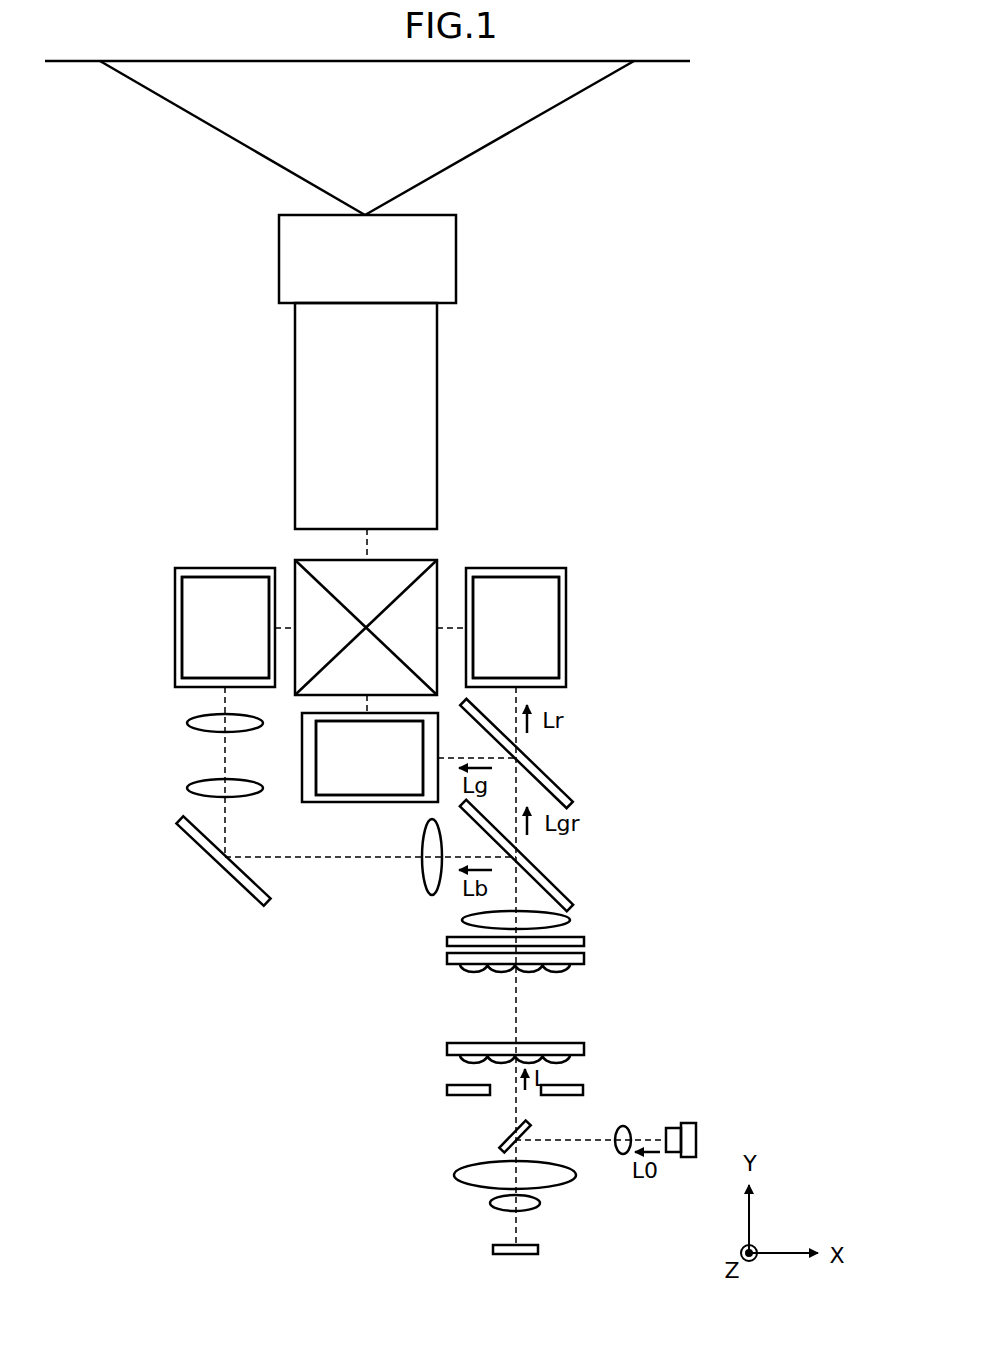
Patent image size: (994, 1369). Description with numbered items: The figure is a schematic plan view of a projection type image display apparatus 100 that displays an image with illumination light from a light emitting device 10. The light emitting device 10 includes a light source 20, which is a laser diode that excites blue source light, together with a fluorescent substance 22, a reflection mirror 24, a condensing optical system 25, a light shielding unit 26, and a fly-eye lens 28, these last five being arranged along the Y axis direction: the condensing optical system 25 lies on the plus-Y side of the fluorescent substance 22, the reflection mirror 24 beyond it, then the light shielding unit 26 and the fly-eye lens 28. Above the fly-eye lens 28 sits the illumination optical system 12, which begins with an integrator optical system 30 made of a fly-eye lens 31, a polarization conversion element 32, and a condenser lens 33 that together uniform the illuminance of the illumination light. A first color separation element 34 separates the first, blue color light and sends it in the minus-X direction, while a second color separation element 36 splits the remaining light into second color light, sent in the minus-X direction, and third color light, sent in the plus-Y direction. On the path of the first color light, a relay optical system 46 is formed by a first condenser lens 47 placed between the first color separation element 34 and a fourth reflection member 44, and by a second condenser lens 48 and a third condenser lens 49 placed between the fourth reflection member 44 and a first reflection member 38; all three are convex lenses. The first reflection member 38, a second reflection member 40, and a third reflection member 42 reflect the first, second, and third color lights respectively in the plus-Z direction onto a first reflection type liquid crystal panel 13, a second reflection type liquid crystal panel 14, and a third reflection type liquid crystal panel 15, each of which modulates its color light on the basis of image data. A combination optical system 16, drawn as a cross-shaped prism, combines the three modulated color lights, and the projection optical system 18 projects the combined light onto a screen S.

The screen S is at (660, 63).
The projection type image display apparatus 100 is at (652, 285).
The projection optical system 18 is at (456, 257).
The combination optical system 16 is at (446, 566).
The first reflection member 38 is at (175, 592).
The first reflection type liquid crystal panel 13 is at (226, 590).
The third reflection member 42 is at (566, 590).
The third reflection type liquid crystal panel 15 is at (516, 590).
The second reflection member 40 is at (388, 802).
The second reflection type liquid crystal panel 14 is at (334, 780).
The relay optical system 46 is at (244, 816).
The third condenser lens 49 is at (187, 722).
The second condenser lens 48 is at (187, 788).
The fourth reflection member 44 is at (236, 882).
The first condenser lens 47 is at (424, 882).
The second color separation element 36 is at (545, 771).
The first color separation element 34 is at (545, 875).
The illumination optical system 12 is at (652, 801).
The integrator optical system 30 is at (434, 952).
The condenser lens 33 is at (462, 918).
The polarization conversion element 32 is at (447, 941).
The fly-eye lens 31 is at (447, 957).
The fly-eye lens 28 is at (447, 1047).
The light shielding unit 26 is at (597, 1089).
The reflection mirror 24 is at (507, 1132).
The light emitting device 10 is at (686, 1106).
The light source 20 is at (697, 1128).
The condensing optical system 25 is at (452, 1189).
The fluorescent substance 22 is at (540, 1250).